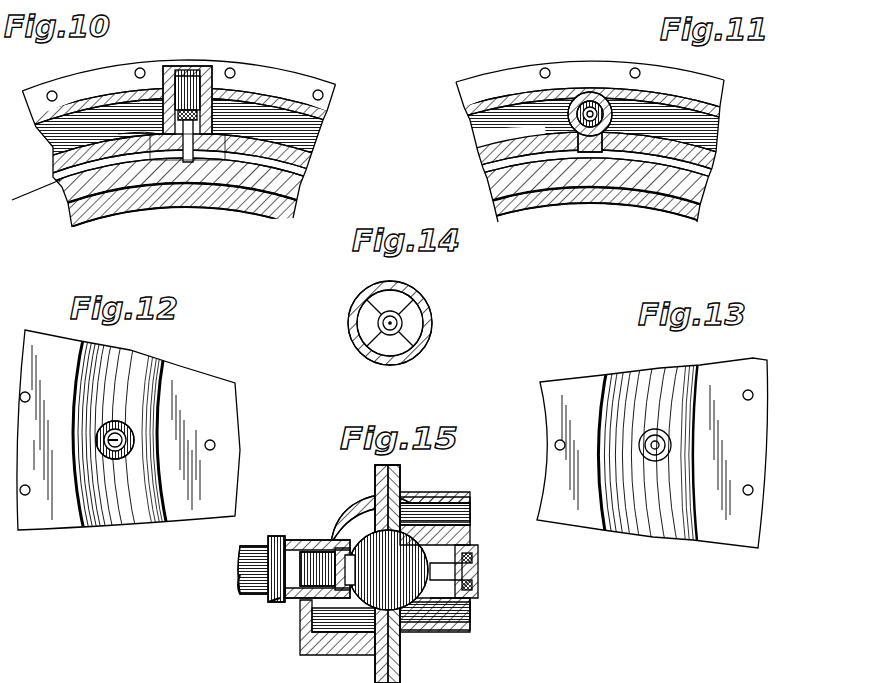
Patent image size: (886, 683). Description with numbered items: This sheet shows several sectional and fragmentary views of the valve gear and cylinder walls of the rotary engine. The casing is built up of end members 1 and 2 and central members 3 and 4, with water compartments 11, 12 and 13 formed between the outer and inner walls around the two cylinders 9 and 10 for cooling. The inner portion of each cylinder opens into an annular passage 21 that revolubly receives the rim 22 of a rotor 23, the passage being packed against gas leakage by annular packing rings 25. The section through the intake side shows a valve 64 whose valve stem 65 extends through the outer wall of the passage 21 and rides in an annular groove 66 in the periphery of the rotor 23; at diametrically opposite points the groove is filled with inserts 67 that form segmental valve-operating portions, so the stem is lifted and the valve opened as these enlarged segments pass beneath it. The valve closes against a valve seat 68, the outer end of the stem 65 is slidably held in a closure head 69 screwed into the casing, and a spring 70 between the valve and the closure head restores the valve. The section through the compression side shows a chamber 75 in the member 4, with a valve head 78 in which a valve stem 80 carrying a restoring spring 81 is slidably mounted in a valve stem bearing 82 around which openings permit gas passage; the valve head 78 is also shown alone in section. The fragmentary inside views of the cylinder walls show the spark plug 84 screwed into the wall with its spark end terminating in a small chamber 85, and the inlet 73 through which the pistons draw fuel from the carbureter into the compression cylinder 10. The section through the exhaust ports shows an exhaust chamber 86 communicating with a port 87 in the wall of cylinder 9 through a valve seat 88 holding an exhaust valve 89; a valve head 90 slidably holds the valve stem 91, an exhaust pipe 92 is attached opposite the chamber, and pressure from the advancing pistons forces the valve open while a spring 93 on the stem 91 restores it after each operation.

In FIG. 12, the end member 1 is at (166, 375).
In FIG. 15, the end member 1 is at (368, 505).
In FIG. 13, the end member 2 is at (600, 388).
In FIG. 10, the central member 3 is at (98, 78).
In FIG. 15, the central member 3 is at (448, 498).
In FIG. 11, the central member 4 is at (573, 66).
In FIG. 12, the cylinder 9 is at (112, 412).
In FIG. 15, the cylinder 9 is at (388, 574).
In FIG. 13, the cylinder 10 is at (655, 462).
In FIG. 15, the water compartment 11 is at (383, 510).
In FIG. 15, the water compartment 12 is at (444, 625).
In FIG. 10, the water compartment 13 is at (205, 143).
In FIG. 11, the water compartment 13 is at (590, 142).
In FIG. 15, the water compartment 13 is at (436, 505).
In FIG. 10, the annular passage 21 is at (252, 190).
In FIG. 11, the annular passage 21 is at (570, 190).
In FIG. 15, the annular passage 21 is at (480, 571).
In FIG. 10, the rim 22 is at (218, 188).
In FIG. 11, the rim 22 is at (646, 180).
In FIG. 15, the rim 22 is at (474, 558).
In FIG. 10, the rotor 23 is at (86, 210).
In FIG. 11, the rotor 23 is at (672, 205).
In FIG. 15, the rotor 23 is at (478, 596).
In FIG. 15, the annular packing ring 25 is at (474, 585).
In FIG. 10, the valve 64 is at (208, 93).
In FIG. 10, the valve stem 65 is at (196, 152).
In FIG. 10, the annular groove 66 is at (108, 134).
In FIG. 10, the insert 67 is at (265, 212).
In FIG. 10, the valve seat 68 is at (221, 106).
In FIG. 10, the closure head 69 is at (170, 72).
In FIG. 10, the spring 70 is at (203, 112).
In FIG. 13, the inlet 73 is at (668, 436).
In FIG. 11, the chamber 75 is at (535, 130).
In FIG. 14, the valve head 78 is at (425, 325).
In FIG. 11, the valve stem 80 is at (592, 110).
In FIG. 11, the restoring spring 81 is at (596, 110).
In FIG. 14, the valve stem bearing 82 is at (378, 322).
In FIG. 12, the spark plug 84 is at (108, 442).
In FIG. 12, the chamber 85 is at (118, 438).
In FIG. 15, the exhaust chamber 86 is at (300, 552).
In FIG. 15, the port 87 is at (330, 548).
In FIG. 15, the valve seat 88 is at (308, 597).
In FIG. 15, the exhaust valve 89 is at (272, 600).
In FIG. 15, the valve head 90 is at (276, 536).
In FIG. 15, the valve stem 91 is at (258, 590).
In FIG. 15, the exhaust pipe 92 is at (250, 566).
In FIG. 15, the spring 93 is at (340, 557).